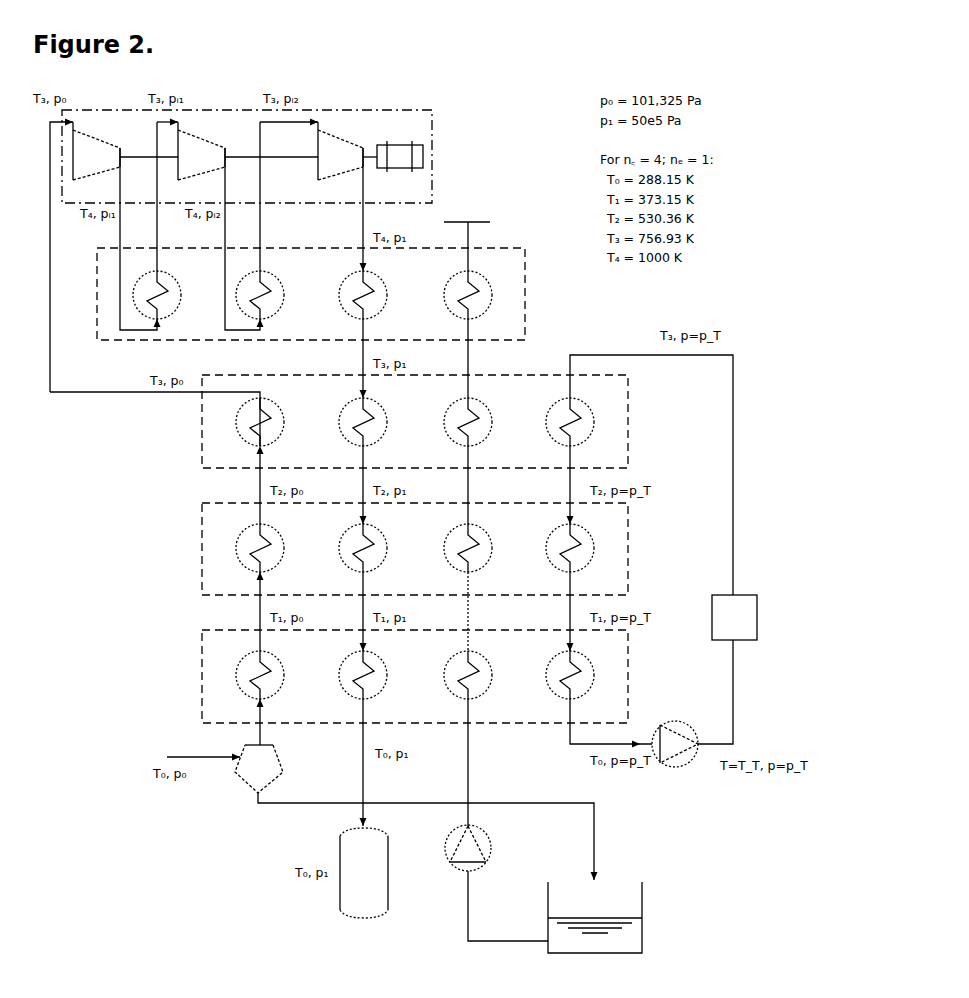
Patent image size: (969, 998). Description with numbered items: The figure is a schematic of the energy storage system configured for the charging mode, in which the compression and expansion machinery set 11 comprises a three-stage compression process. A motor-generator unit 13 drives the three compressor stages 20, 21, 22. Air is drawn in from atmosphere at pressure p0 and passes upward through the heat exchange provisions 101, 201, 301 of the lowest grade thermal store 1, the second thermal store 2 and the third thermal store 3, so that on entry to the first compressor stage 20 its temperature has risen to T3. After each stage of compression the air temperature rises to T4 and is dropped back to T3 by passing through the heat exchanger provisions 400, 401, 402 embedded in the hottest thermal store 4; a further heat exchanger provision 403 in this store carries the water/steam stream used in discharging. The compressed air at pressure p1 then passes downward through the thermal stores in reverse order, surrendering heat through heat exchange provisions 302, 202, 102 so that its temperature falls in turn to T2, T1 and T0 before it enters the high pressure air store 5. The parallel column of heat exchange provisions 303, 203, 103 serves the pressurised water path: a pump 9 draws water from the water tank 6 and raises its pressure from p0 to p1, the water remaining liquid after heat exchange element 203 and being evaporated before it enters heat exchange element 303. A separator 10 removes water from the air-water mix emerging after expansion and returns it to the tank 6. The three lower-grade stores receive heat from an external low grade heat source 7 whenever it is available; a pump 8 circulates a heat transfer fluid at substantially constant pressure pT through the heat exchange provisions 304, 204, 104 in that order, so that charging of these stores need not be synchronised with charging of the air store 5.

The compression and expansion machinery set 11 is at (247, 146).
The first compressor stage 20 is at (125, 151).
The second compressor stage 21 is at (248, 151).
The third compressor stage 22 is at (347, 151).
The motor-generator unit 13 is at (400, 164).
The highest grade thermal store 4 is at (319, 294).
The heat exchanger provision 400 is at (166, 302).
The heat exchanger provision 401 is at (268, 302).
The heat exchanger provision 402 is at (372, 302).
The heat exchanger provision 403 is at (470, 302).
The third thermal store 3 is at (425, 421).
The heat exchanger element 301 is at (250, 429).
The heat exchange unit 302 is at (354, 429).
The heat exchange element 303 is at (460, 429).
The heat exchange provision 304 is at (562, 429).
The second thermal store 2 is at (423, 549).
The heat exchange provision 201 is at (250, 556).
The heat exchange provision 202 is at (354, 556).
The heat exchange provision 203 is at (460, 556).
The heat exchange provision 204 is at (562, 556).
The lowest grade thermal store 1 is at (425, 676).
The heat exchange provision 101 is at (253, 683).
The heat exchange provision 102 is at (357, 683).
The heat exchange provision 103 is at (462, 683).
The heat exchange provision 104 is at (564, 683).
The separator 10 is at (255, 772).
The high pressure air store 5 is at (356, 876).
The pump 9 is at (459, 848).
The water tank 6 is at (604, 917).
The means of collecting low grade heat 7 is at (742, 617).
The pump 8 is at (675, 755).